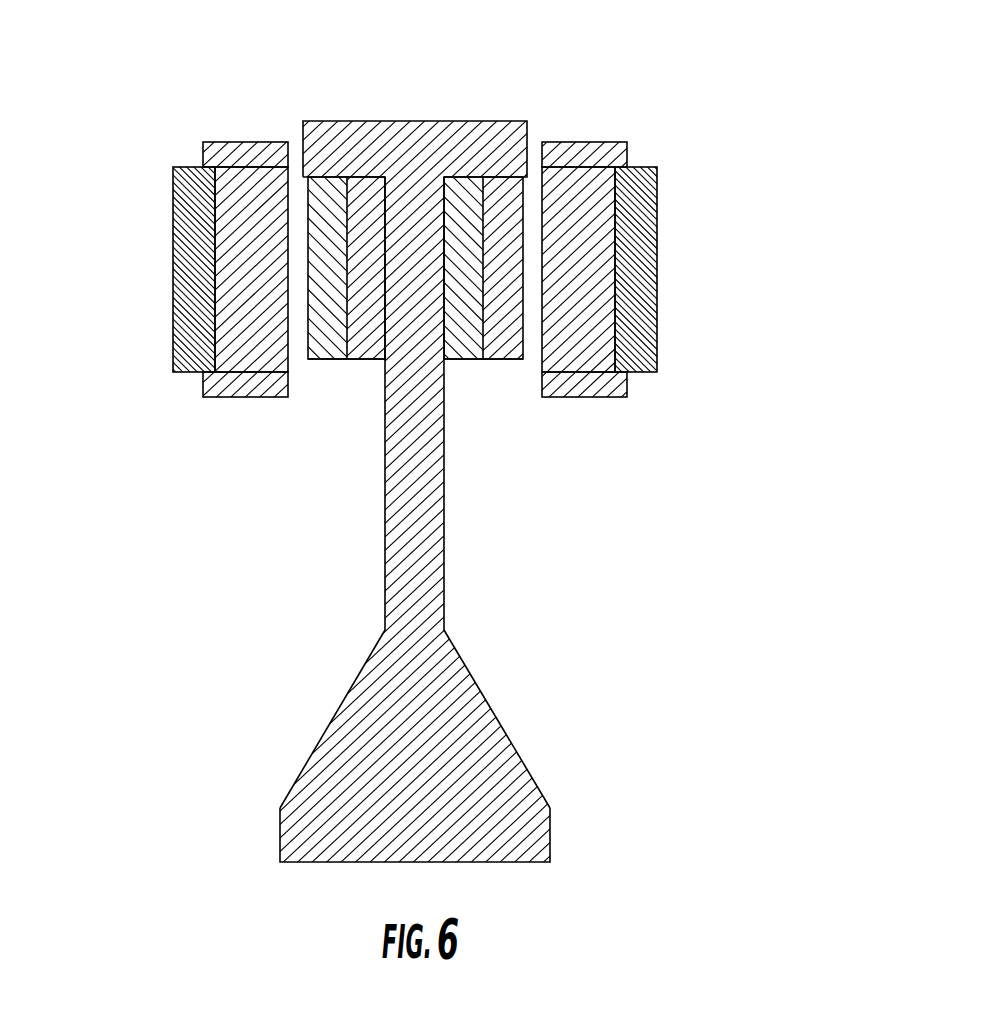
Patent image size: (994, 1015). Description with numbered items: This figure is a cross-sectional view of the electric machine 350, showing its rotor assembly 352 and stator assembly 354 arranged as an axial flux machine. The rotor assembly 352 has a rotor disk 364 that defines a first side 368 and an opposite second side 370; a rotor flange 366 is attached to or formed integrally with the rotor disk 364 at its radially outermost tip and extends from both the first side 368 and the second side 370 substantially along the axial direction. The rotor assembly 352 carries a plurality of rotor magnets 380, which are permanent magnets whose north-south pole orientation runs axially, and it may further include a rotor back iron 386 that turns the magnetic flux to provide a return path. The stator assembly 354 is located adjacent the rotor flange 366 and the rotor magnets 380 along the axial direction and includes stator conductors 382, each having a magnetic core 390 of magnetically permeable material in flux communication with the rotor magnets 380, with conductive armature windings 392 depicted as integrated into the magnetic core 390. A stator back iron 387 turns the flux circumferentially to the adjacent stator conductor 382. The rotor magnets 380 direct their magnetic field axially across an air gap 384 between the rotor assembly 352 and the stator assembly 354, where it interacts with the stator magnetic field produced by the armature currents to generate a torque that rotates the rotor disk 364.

The electric machine 350 is at (600, 45).
The rotor assembly 352 is at (497, 432).
The stator assembly 354 is at (253, 118).
The rotor disk 364 is at (410, 523).
The rotor flange 366 is at (475, 135).
The first side 368 is at (383, 613).
The second side 370 is at (445, 613).
The rotor magnets 380 is at (317, 288).
The stator conductors 382 is at (237, 217).
The air gap 384 is at (302, 368).
The rotor back iron 386 is at (367, 323).
The stator back iron 387 is at (185, 280).
The magnetic core 390 is at (663, 180).
The armature windings 392 is at (572, 150).